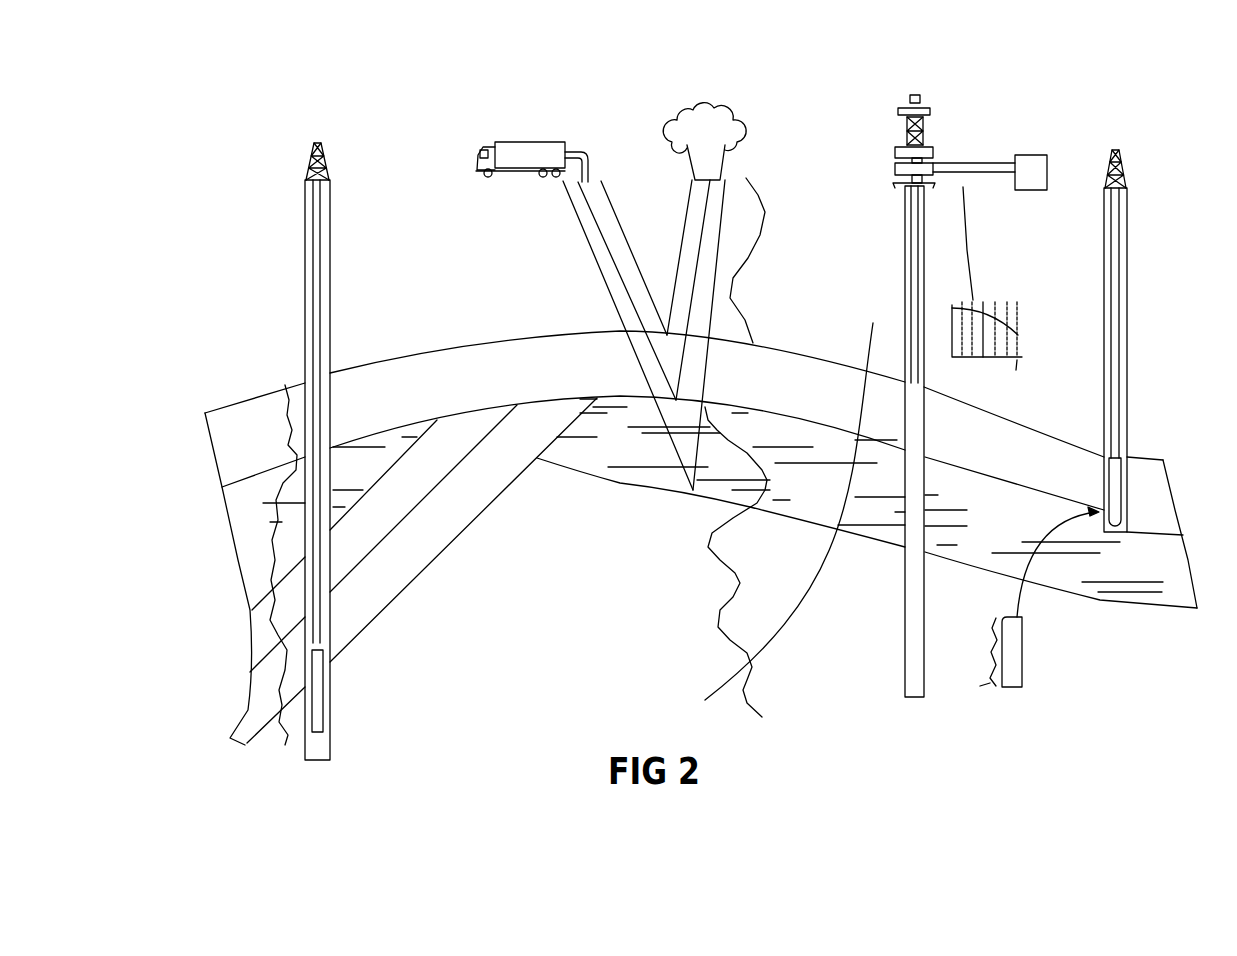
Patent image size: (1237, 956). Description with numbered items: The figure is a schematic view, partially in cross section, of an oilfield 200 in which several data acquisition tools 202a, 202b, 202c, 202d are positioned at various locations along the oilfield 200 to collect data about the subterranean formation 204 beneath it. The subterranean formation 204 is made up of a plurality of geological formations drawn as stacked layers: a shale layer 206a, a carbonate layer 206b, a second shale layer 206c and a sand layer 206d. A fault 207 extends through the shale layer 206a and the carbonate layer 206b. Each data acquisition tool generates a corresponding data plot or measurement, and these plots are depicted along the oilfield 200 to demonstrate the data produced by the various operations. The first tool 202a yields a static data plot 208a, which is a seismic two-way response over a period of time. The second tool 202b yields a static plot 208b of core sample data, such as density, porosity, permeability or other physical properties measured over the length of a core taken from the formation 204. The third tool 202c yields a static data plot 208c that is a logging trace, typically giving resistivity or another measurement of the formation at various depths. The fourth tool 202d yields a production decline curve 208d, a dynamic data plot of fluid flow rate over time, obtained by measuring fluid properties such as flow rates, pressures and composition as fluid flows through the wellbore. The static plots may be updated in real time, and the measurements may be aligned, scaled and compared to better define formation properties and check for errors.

The oilfield 200 is at (1076, 154).
The data acquisition tool 202a is at (500, 142).
The data acquisition tool 202b is at (1125, 510).
The data acquisition tool 202c is at (326, 697).
The data acquisition tool 202d is at (903, 415).
The subterranean formation 204 is at (588, 561).
The shale layer 206a is at (531, 388).
The carbonate layer 206b is at (373, 479).
The shale layer 206c is at (429, 497).
The sand layer 206d is at (483, 507).
The fault 207 is at (870, 336).
The static data plot 208a is at (733, 593).
The static data plot 208b is at (992, 632).
The static data plot 208c is at (275, 512).
The production decline curve 208d is at (987, 358).